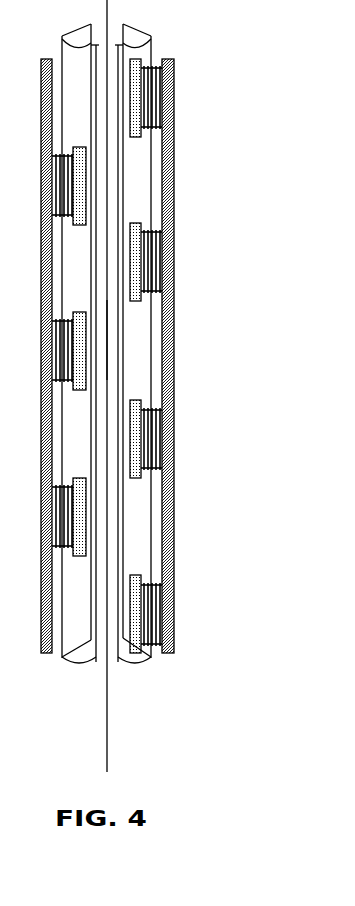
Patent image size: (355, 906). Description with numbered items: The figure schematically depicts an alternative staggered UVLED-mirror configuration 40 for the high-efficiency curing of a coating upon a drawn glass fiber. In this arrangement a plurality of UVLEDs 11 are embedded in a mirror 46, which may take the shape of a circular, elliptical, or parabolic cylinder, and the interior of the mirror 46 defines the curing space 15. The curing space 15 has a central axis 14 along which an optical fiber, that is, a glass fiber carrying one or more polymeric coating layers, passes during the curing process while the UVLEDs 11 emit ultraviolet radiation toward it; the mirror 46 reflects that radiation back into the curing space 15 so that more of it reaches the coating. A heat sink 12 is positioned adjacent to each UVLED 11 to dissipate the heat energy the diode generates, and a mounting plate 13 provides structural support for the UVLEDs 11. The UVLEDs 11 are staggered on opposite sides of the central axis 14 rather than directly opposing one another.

The UVLED 11 is at (143, 261).
The heat sink 12 is at (160, 99).
The mounting plate 13 is at (177, 291).
The central axis 14 is at (110, 713).
The curing space 15 is at (110, 340).
The staggered UVLED-mirror configuration 40 is at (188, 386).
The mirror 46 is at (133, 518).